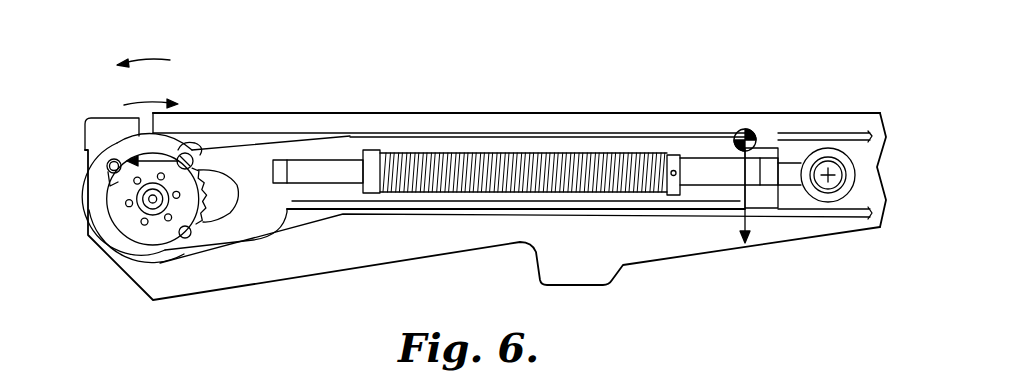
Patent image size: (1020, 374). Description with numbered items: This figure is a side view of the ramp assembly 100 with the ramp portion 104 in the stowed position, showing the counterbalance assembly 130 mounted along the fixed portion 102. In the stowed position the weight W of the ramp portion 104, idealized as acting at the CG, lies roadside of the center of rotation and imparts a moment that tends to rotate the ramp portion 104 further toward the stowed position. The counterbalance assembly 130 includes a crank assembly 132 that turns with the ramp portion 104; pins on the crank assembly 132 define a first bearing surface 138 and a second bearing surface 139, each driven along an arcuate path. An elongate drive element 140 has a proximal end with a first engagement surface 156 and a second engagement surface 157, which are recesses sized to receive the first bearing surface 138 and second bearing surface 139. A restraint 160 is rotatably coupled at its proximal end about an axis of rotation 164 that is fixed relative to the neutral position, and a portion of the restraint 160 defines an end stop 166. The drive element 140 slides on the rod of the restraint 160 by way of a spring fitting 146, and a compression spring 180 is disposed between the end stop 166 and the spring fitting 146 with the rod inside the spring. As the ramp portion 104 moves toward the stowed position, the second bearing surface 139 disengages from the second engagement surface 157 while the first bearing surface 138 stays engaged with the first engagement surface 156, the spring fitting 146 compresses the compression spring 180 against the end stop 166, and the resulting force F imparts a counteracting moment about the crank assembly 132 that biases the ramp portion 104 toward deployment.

The ramp assembly 100 is at (697, 50).
The fixed portion 102 is at (700, 247).
The ramp portion 104 is at (808, 115).
The counterbalance assembly 130 is at (497, 215).
The crank assembly 132 is at (88, 222).
The first bearing surface 138 is at (212, 166).
The second bearing surface 139 is at (112, 186).
The drive element 140 is at (305, 135).
The spring fitting 146 is at (374, 151).
The first engagement surface 156 is at (179, 152).
The second engagement surface 157 is at (182, 236).
The restraint 160 is at (795, 183).
The axis of rotation 164 is at (833, 183).
The end stop 166 is at (673, 153).
The compression spring 180 is at (538, 151).